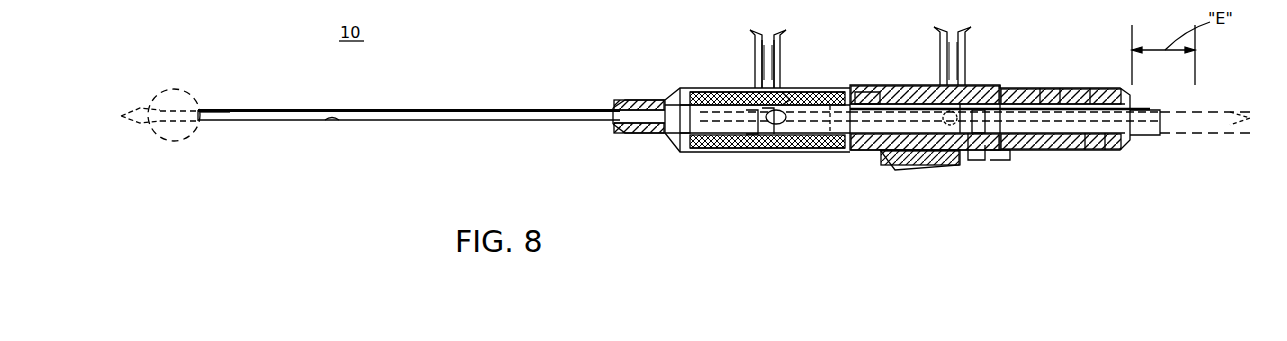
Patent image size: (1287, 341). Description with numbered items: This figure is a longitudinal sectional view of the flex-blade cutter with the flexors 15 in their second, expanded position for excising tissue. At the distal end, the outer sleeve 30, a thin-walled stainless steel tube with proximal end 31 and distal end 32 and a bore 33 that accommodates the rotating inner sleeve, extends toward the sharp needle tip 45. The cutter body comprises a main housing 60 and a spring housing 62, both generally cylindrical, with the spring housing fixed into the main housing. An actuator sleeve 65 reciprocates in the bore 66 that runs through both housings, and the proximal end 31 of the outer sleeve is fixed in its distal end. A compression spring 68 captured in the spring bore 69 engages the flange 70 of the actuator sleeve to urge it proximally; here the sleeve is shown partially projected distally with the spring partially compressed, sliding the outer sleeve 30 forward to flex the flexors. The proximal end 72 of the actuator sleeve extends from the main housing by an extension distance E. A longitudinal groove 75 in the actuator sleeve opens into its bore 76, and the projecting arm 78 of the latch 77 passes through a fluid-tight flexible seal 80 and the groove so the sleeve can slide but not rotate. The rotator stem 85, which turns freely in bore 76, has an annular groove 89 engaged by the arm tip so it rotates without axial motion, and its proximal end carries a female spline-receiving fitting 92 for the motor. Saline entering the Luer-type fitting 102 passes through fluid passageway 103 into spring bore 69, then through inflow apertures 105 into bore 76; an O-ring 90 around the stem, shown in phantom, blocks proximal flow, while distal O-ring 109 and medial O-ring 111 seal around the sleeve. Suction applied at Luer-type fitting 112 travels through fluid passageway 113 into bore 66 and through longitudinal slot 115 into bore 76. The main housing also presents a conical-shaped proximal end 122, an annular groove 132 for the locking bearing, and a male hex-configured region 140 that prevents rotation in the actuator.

The flexors 15 is at (172, 90).
The outer sleeve 30 is at (312, 110).
The proximal end of outer sleeve 31 is at (604, 110).
The distal end of outer sleeve 32 is at (222, 110).
The bore of outer sleeve 33 is at (330, 121).
The sharp needle tip 45 is at (137, 110).
The main housing 60 is at (882, 85).
The spring housing 62 is at (682, 88).
The actuator sleeve 65 is at (650, 134).
The bore 66 is at (1006, 88).
The compression spring 68 is at (752, 136).
The spring bore 69 is at (768, 136).
The flange 70 is at (822, 144).
The proximal end of actuator sleeve 72 is at (1152, 136).
The longitudinal groove 75 is at (1000, 152).
The bore of actuator sleeve 76 is at (1088, 152).
The latch 77 is at (900, 170).
The projecting arm 78 is at (970, 148).
The flexible seal 80 is at (978, 136).
The rotator stem 85 is at (1194, 136).
The annular groove 89 is at (1000, 102).
The O-ring 90 is at (828, 150).
The female spline-receiving fitting 92 is at (1238, 110).
The Luer-type fitting 102 is at (752, 36).
The fluid passageway 103 is at (764, 62).
The inflow apertures 105 is at (786, 96).
The distal O-ring 109 is at (680, 152).
The medial O-ring 111 is at (858, 92).
The Luer-type fitting 112 is at (938, 38).
The fluid passageway 113 is at (948, 66).
The longitudinal slot 115 is at (962, 102).
The conical-shaped proximal end 122 is at (1060, 88).
The annular groove 132 is at (1048, 88).
The male hex-configured region 140 is at (1110, 152).